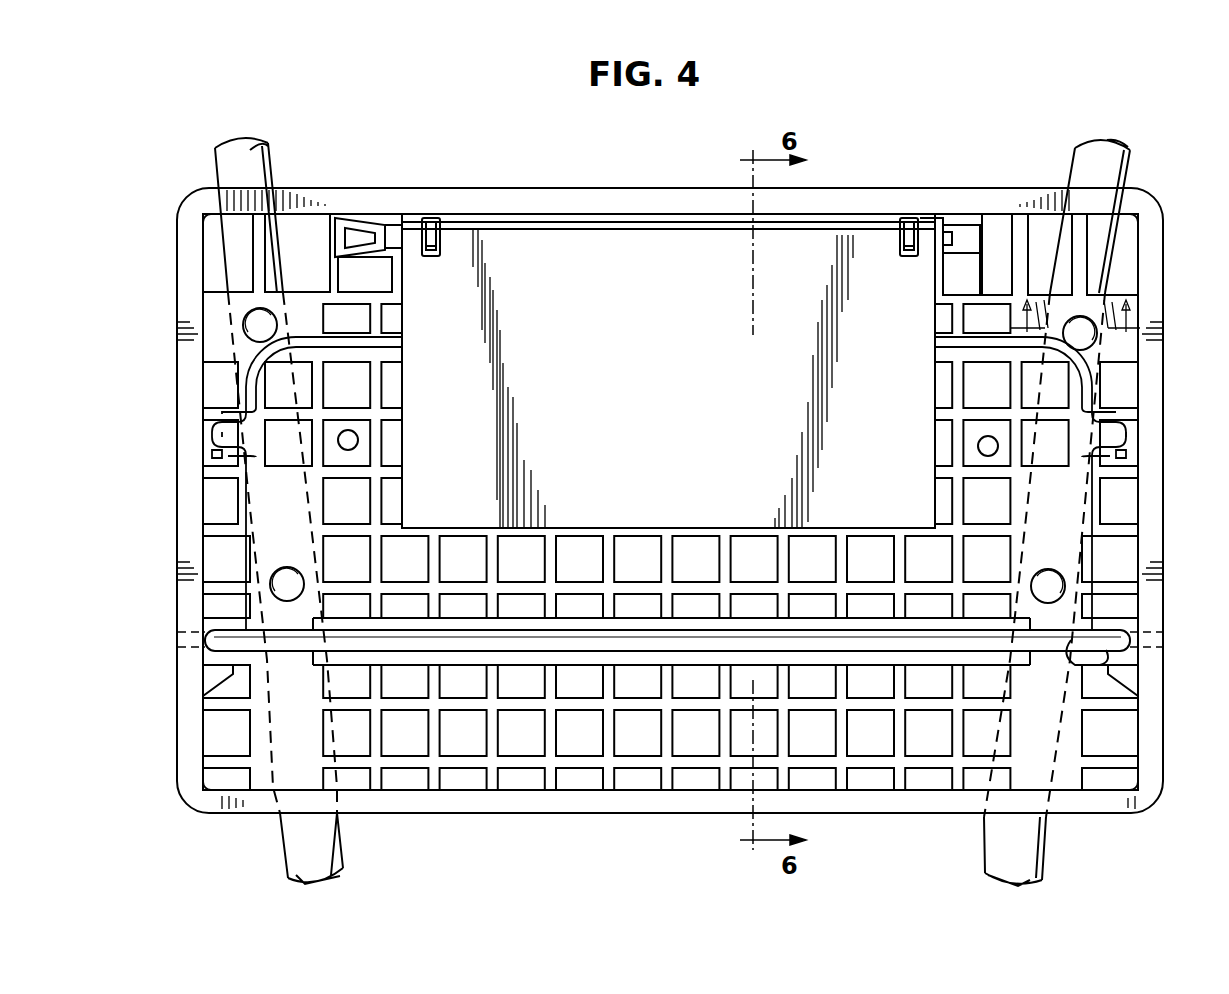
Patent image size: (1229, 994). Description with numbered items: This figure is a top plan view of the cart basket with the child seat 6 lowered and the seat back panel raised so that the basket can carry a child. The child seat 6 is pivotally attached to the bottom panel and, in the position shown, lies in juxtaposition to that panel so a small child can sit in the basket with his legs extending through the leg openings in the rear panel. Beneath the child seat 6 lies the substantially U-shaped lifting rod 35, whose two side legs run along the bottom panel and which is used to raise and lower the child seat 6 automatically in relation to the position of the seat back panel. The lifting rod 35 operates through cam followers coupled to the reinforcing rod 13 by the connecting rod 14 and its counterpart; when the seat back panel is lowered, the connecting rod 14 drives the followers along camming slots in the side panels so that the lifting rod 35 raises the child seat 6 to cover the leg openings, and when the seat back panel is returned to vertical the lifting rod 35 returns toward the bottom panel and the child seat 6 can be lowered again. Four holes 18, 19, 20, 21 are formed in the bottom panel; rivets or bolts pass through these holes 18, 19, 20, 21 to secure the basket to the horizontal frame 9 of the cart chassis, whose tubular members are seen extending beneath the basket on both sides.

The child seat 6 is at (860, 243).
The horizontal frame 9 is at (1128, 168).
The reinforcing rod 13 is at (1105, 664).
The connecting rod 14 is at (1000, 238).
The hole 18 is at (250, 331).
The hole 19 is at (283, 592).
The hole 20 is at (1052, 590).
The hole 21 is at (1087, 338).
The lifting rod 35 is at (1093, 398).